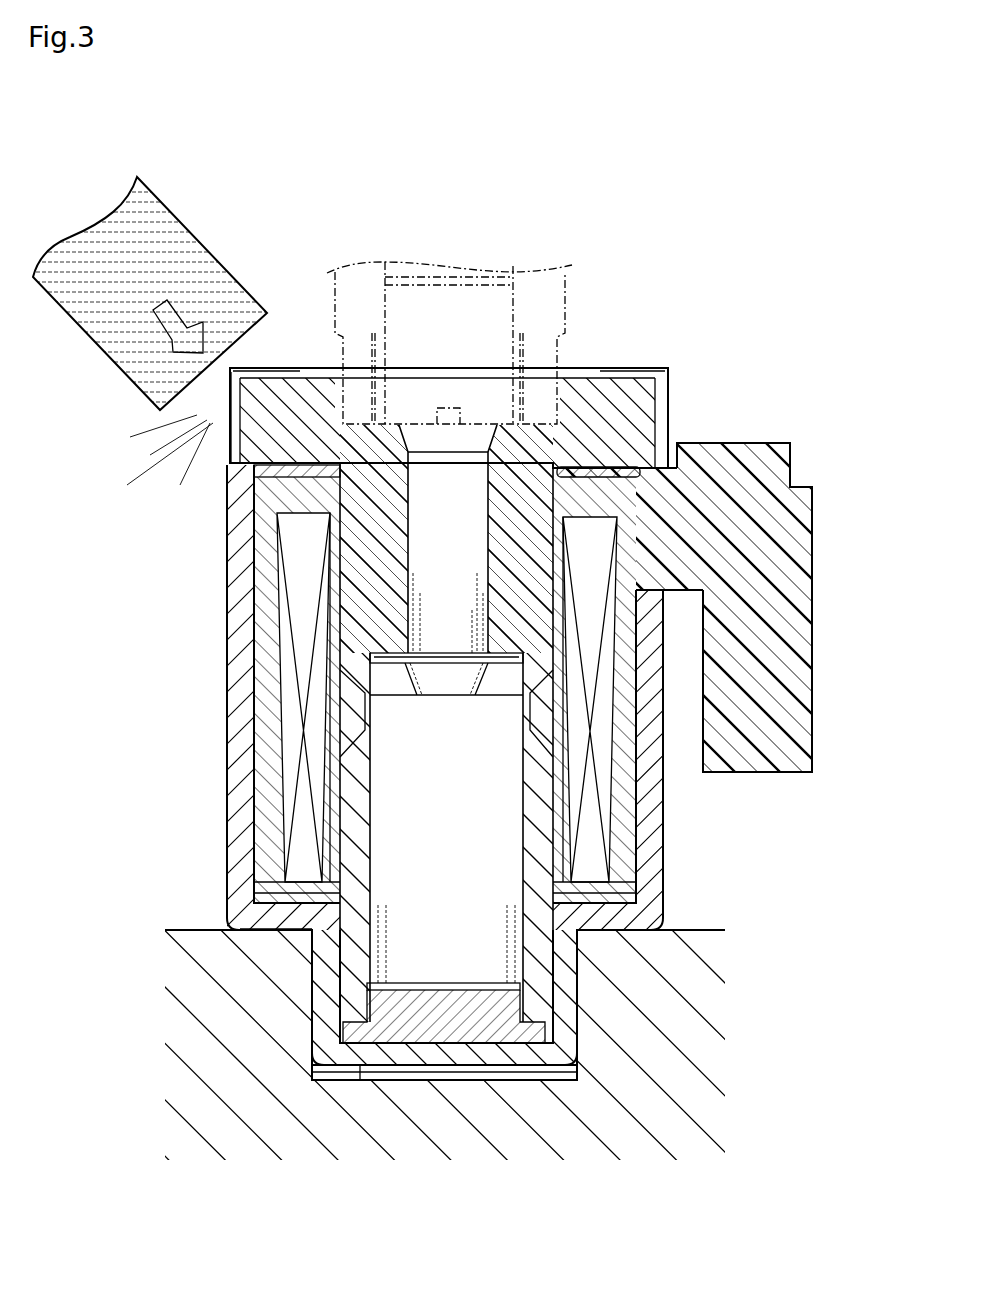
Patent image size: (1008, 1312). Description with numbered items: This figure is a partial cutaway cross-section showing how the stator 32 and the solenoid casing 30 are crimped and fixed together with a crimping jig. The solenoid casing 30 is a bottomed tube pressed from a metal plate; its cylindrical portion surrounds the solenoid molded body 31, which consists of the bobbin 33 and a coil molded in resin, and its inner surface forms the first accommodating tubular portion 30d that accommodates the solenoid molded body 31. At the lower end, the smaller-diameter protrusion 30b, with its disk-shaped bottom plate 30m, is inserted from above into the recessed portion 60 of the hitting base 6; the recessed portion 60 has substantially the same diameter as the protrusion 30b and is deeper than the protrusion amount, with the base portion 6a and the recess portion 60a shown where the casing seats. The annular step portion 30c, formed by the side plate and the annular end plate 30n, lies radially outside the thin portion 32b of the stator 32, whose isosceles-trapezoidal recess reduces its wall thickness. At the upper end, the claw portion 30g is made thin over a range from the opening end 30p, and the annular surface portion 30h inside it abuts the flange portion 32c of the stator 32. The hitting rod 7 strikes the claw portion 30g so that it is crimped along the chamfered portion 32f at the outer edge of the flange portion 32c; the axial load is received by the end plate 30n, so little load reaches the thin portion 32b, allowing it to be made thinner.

The hitting rod 7 is at (182, 262).
The solenoid casing 30 is at (225, 685).
The protrusion 30b is at (446, 1070).
The annular step portion 30c is at (300, 920).
The first accommodating tubular portion 30d is at (280, 697).
The claw portion 30g is at (265, 368).
The annular surface portion 30h is at (227, 460).
The bottom plate 30m is at (520, 1053).
The end plate 30n is at (310, 930).
The opening end 30p is at (642, 368).
The solenoid molded body 31 is at (823, 589).
The stator 32 is at (600, 370).
The thin portion 32b is at (530, 712).
The flange portion 32c is at (230, 437).
The chamfered portion 32f is at (230, 388).
The bobbin 33 is at (275, 937).
The hitting base 6 is at (192, 928).
The base surface 6a is at (688, 930).
The recessed portion 60 is at (342, 1080).
The plate end 60a is at (366, 1080).